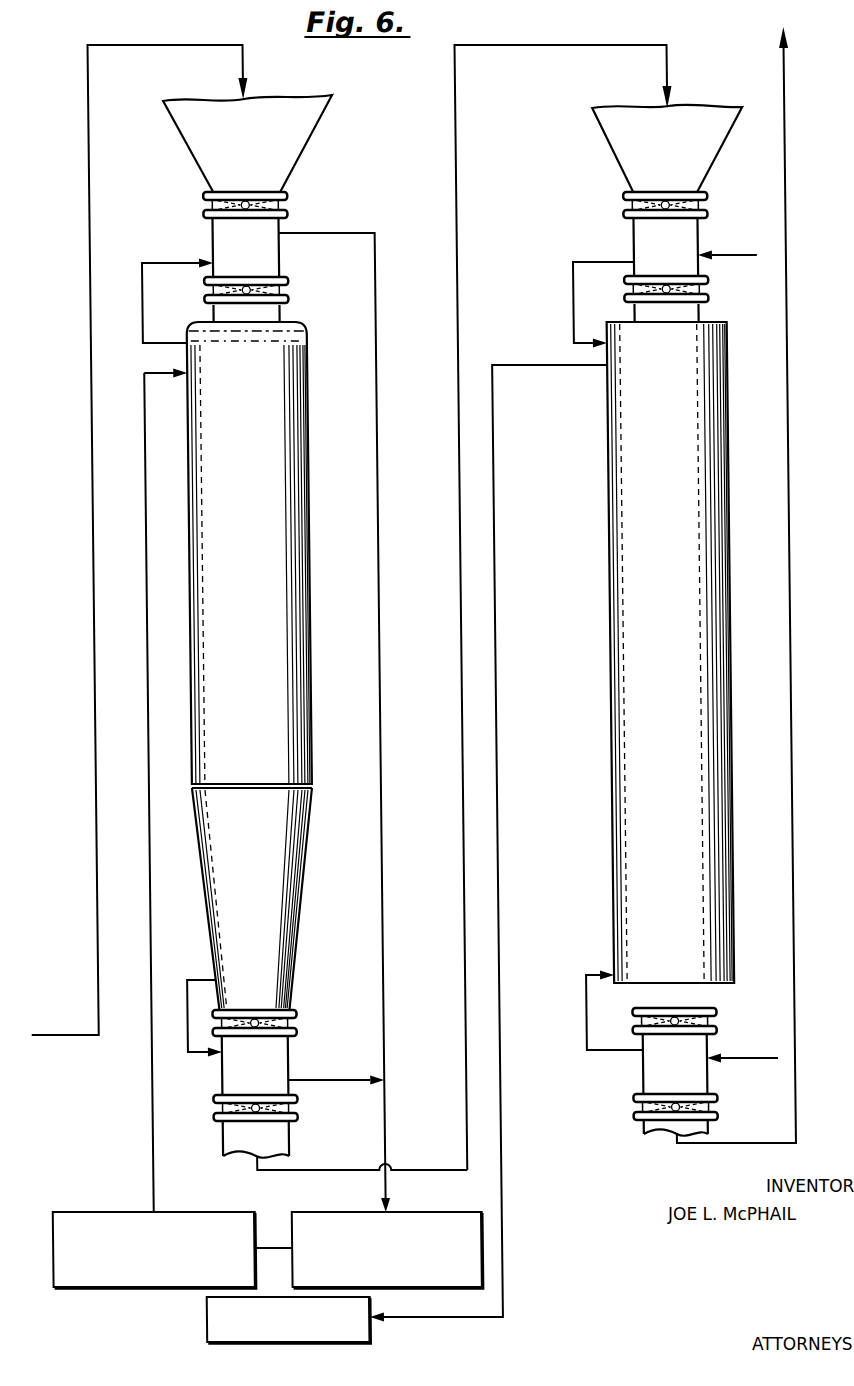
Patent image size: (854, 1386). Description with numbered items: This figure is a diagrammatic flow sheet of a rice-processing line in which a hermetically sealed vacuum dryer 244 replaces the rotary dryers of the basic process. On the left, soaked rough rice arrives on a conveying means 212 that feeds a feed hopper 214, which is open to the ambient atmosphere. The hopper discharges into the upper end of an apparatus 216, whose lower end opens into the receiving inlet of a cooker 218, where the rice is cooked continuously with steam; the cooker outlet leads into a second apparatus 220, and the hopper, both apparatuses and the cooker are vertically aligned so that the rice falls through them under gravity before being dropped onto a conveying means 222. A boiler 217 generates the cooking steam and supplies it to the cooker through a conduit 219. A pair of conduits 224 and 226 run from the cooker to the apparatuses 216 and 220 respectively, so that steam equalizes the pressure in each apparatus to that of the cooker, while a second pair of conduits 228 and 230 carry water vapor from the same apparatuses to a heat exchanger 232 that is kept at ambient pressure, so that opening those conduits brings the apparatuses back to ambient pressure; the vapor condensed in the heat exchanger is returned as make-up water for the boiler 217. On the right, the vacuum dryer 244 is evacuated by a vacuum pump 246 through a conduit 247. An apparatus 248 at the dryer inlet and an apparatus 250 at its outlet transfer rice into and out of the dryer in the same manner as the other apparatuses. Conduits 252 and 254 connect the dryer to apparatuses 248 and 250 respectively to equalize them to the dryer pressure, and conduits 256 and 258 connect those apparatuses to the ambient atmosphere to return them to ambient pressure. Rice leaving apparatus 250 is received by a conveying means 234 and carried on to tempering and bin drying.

The conveying means 212 is at (87, 926).
The feed hopper 214 is at (313, 141).
The apparatus 216 is at (272, 261).
The boiler 217 is at (108, 1212).
The cooker 218 is at (304, 453).
The steam line from boiler 219 is at (140, 450).
The apparatus 220 is at (211, 1079).
The conveying means 222 is at (454, 773).
The conduit 224 is at (139, 263).
The conduit 226 is at (176, 980).
The conduit 228 is at (375, 433).
The conduit 230 is at (306, 1082).
The heat exchanger 232 is at (338, 1212).
The conveying means 234 is at (783, 548).
The vacuum dryer 244 is at (603, 562).
The vacuum pump 246 is at (355, 1330).
The conduit 247 is at (488, 754).
The apparatus 248 is at (636, 241).
The apparatus 250 is at (631, 1078).
The conduit 252 is at (570, 318).
The conduit 254 is at (575, 1000).
The conduit 256 is at (738, 248).
The conduit 258 is at (728, 1058).